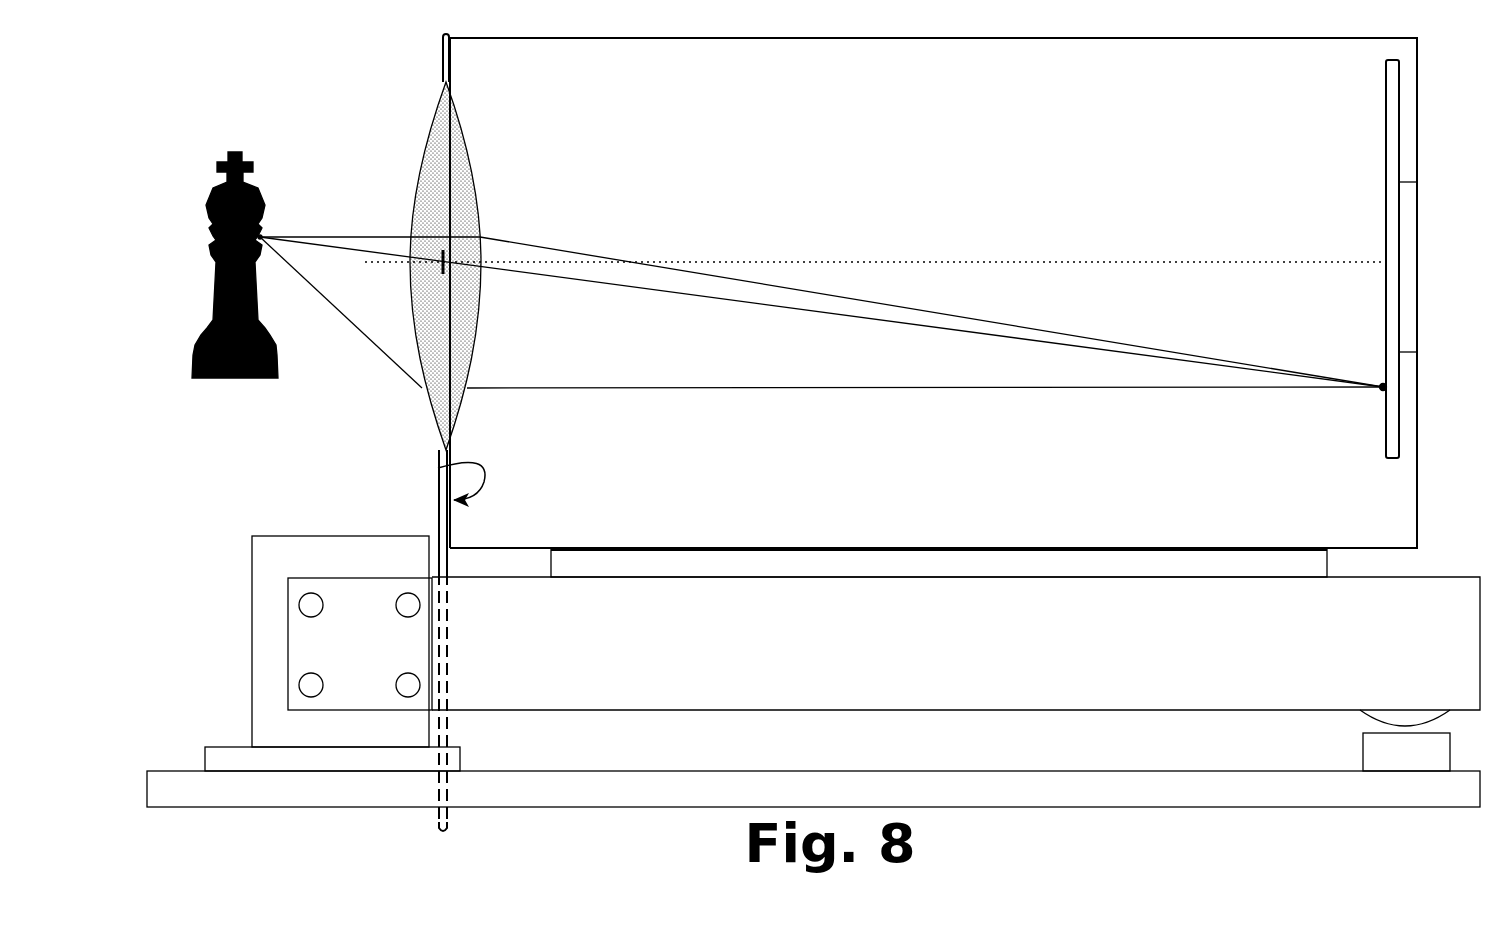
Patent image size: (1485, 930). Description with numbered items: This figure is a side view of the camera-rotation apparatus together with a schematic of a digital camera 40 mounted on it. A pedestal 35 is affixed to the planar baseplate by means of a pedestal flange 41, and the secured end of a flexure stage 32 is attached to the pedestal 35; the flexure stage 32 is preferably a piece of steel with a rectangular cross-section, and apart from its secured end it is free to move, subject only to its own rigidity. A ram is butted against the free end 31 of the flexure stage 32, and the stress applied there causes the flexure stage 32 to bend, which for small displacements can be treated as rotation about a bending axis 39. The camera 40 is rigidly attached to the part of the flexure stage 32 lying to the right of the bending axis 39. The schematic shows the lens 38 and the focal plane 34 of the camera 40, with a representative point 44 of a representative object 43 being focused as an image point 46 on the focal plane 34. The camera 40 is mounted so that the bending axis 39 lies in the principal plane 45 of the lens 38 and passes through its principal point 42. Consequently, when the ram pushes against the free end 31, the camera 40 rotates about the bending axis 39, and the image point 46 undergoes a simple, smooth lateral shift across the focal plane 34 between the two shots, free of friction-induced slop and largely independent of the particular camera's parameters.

The free end 31 is at (1469, 722).
The flexure stage 32 is at (902, 543).
The focal plane 34 is at (1383, 88).
The pedestal 35 is at (266, 603).
The lens 38 is at (466, 125).
The bending axis 39 is at (451, 723).
The digital camera 40 is at (920, 129).
The pedestal flange 41 is at (335, 534).
The principal point 42 is at (450, 259).
The representative object 43 is at (236, 141).
The representative point 44 is at (266, 230).
The principal plane 45 is at (438, 58).
The image point 46 is at (1382, 396).